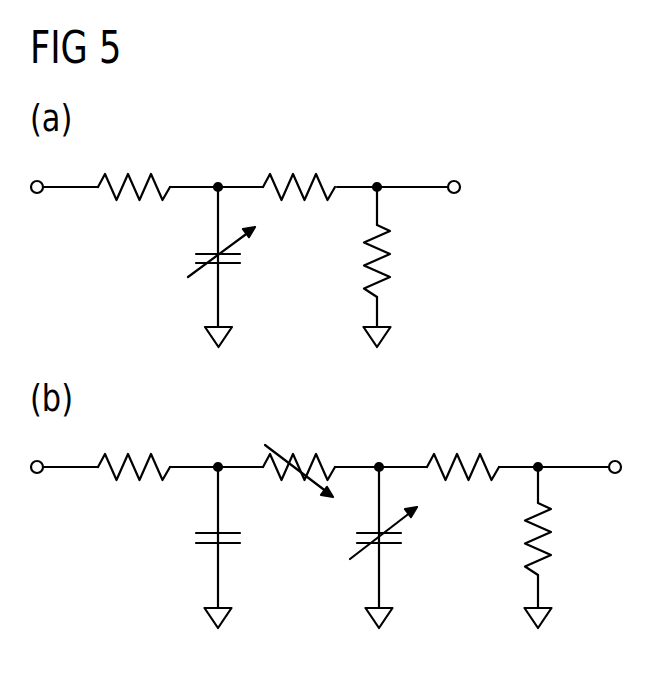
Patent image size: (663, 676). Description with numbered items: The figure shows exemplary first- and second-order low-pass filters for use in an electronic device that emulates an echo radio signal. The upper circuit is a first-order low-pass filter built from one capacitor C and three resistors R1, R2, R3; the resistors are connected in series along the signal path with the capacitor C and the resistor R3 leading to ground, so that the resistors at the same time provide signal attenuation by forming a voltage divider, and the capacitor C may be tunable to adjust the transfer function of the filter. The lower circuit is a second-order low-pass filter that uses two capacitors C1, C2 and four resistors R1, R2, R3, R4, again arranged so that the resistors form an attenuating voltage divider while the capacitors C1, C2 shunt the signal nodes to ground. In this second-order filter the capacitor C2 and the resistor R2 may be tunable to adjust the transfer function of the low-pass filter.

The resistor R1 is at (134, 304).
The resistor R2 is at (299, 313).
The resistor R3 is at (431, 352).
The resistor R4 is at (557, 541).
The capacitor C is at (214, 253).
The capacitor C1 is at (201, 537).
The capacitor C2 is at (368, 534).